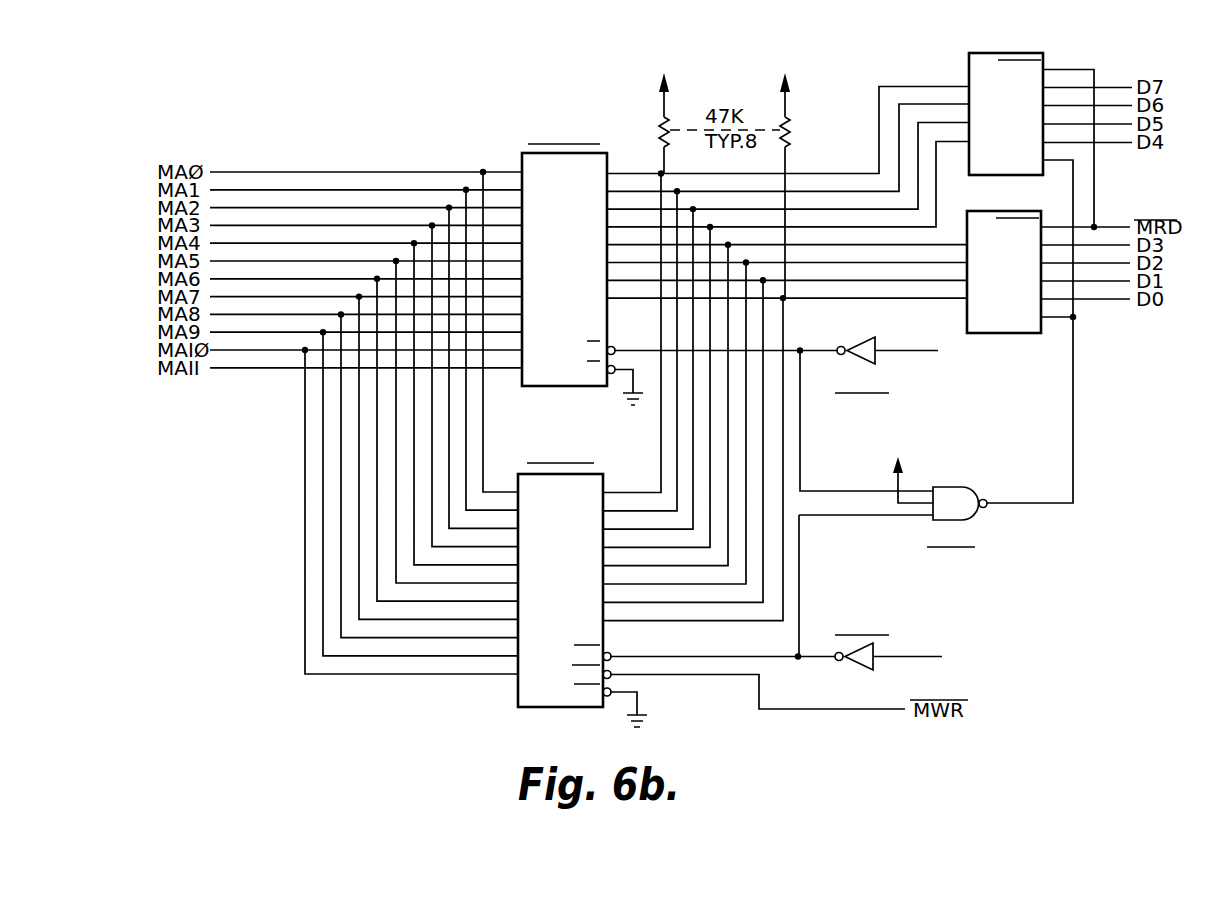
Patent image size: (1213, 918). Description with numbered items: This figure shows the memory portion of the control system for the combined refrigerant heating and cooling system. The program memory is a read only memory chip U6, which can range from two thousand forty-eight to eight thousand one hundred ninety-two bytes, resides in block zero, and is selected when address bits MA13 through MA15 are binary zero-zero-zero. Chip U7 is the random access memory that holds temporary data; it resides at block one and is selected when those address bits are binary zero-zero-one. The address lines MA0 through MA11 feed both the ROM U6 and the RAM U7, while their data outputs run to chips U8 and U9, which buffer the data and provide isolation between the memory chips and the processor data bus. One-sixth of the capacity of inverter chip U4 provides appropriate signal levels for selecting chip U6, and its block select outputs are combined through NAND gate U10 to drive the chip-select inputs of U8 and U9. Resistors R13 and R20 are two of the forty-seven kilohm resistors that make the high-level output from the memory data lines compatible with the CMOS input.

The read only memory chip U6 is at (569, 253).
The random access memory chip U7 is at (563, 574).
The data buffer chip U8 is at (1003, 99).
The data buffer chip U9 is at (1001, 258).
The inverter chip U4 is at (922, 504).
The NAND gate U10 is at (957, 502).
The pull-up resistor R13 is at (649, 123).
The pull-up resistor R20 is at (811, 185).